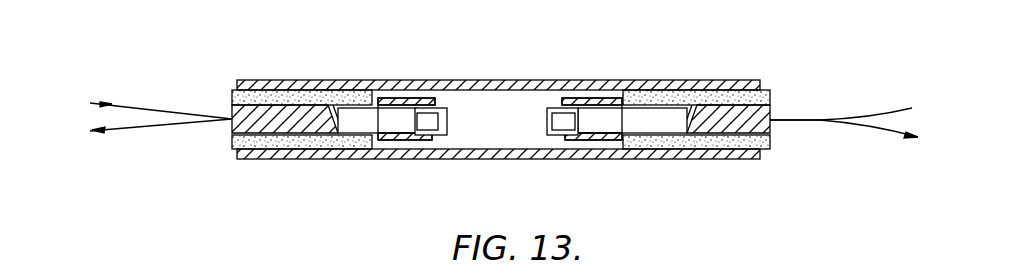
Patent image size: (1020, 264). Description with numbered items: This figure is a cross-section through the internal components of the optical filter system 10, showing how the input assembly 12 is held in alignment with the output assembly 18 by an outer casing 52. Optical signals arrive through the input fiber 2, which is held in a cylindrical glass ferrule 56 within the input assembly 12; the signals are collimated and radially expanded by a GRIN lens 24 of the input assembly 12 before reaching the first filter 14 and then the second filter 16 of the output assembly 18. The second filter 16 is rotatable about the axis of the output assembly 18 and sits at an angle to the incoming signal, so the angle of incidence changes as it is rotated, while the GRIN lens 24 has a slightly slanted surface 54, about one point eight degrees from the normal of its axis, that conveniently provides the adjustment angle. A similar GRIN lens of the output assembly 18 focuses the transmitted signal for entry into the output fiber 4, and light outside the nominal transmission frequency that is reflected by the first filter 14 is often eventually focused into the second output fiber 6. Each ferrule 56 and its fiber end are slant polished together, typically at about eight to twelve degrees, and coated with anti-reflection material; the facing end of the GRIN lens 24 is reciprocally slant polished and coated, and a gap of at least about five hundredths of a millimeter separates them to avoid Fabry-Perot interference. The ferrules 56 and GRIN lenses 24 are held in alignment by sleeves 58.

The optical filter system 10 is at (622, 38).
The input assembly 12 is at (262, 86).
The first filter 14 is at (449, 120).
The second filter 16 is at (548, 120).
The output assembly 18 is at (740, 149).
The GRIN lens 24 is at (360, 118).
The outer casing 52 is at (752, 82).
The slanted surface 54 is at (424, 116).
The cylindrical glass ferrule 56 is at (266, 128).
The sleeve 58 is at (364, 149).
The input fiber 2 is at (120, 110).
The output fiber 4 is at (863, 128).
The second output fiber 6 is at (120, 126).